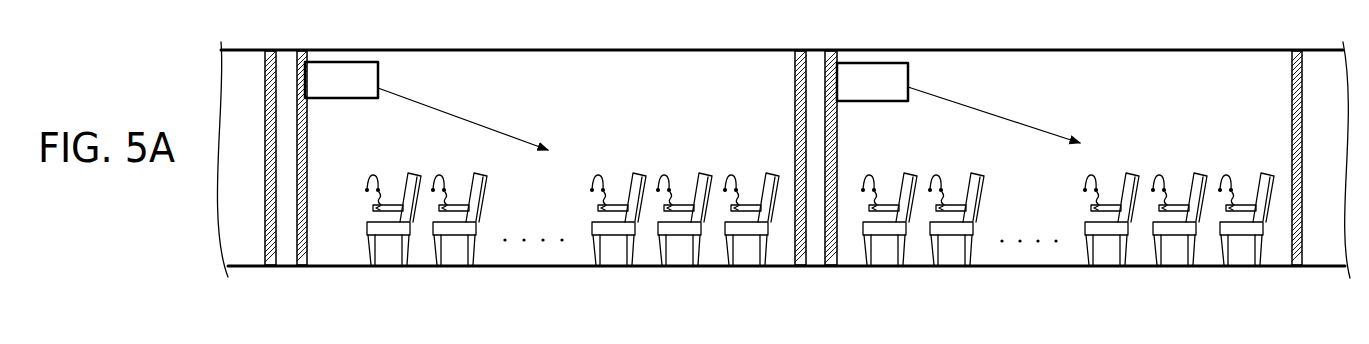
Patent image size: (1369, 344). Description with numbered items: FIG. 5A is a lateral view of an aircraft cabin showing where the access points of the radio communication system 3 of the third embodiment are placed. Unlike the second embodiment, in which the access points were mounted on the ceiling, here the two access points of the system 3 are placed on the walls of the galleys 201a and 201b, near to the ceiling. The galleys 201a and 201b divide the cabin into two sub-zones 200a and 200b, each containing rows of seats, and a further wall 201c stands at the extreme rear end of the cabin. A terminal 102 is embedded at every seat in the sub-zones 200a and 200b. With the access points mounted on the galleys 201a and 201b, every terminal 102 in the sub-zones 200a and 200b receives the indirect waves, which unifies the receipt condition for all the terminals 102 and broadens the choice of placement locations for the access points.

The radio communication system 3 is at (415, 32).
The sub-zone 200a is at (549, 62).
The sub-zone 200b is at (1083, 63).
The galley 201a is at (307, 148).
The galley 201b is at (793, 128).
The wall 201c is at (1288, 127).
The terminal 102 is at (492, 197).